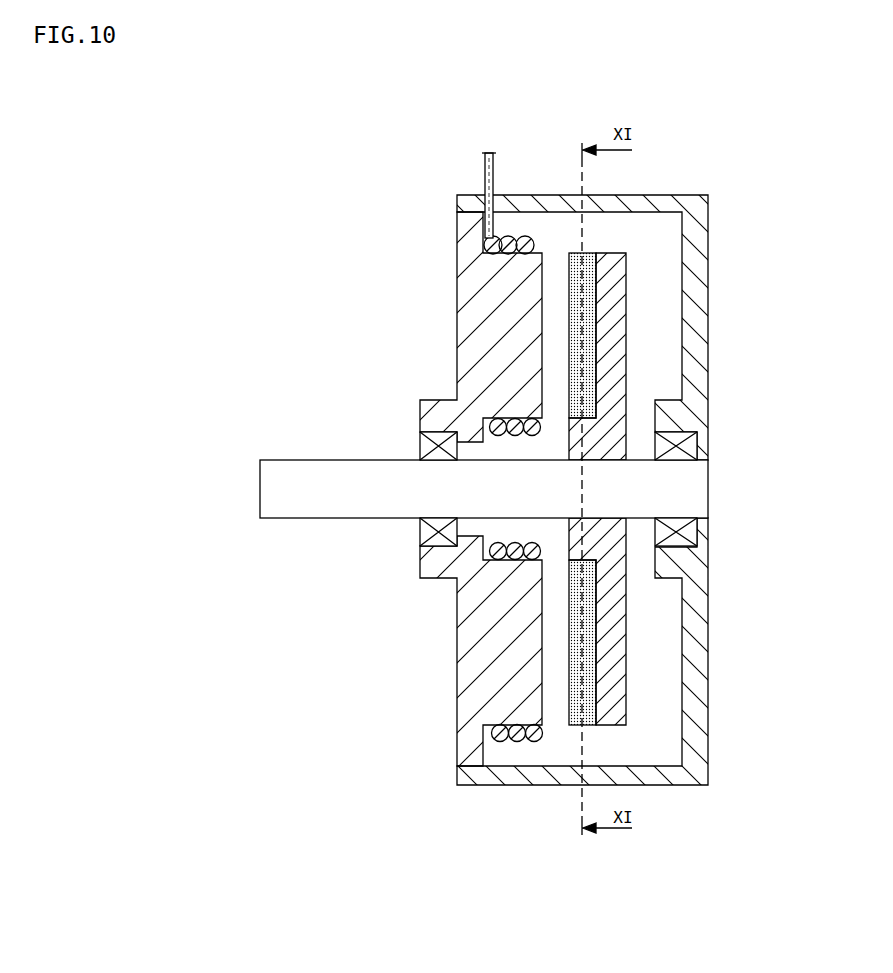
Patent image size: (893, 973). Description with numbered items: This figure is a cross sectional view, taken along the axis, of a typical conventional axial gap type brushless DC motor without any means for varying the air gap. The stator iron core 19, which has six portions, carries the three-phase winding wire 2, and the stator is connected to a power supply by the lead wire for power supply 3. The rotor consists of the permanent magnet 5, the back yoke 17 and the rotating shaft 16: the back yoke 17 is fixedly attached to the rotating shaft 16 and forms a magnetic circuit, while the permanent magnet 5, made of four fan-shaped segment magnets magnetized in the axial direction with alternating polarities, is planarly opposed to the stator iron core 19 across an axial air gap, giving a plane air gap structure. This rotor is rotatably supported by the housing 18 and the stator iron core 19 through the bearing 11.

The winding wire 2 is at (506, 237).
The lead wire for power supply 3 is at (489, 172).
The permanent magnet 5 is at (580, 253).
The bearing 11 is at (430, 449).
The rotating shaft 16 is at (294, 472).
The back yoke 17 is at (608, 256).
The housing 18 is at (690, 248).
The stator iron core 19 is at (467, 300).